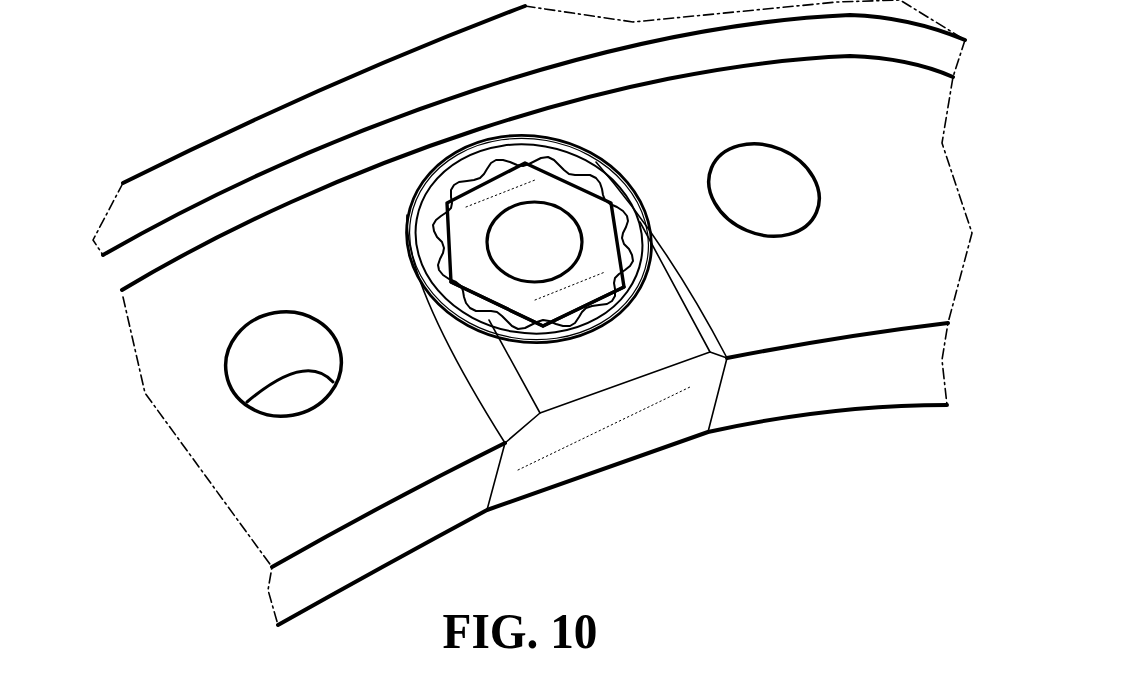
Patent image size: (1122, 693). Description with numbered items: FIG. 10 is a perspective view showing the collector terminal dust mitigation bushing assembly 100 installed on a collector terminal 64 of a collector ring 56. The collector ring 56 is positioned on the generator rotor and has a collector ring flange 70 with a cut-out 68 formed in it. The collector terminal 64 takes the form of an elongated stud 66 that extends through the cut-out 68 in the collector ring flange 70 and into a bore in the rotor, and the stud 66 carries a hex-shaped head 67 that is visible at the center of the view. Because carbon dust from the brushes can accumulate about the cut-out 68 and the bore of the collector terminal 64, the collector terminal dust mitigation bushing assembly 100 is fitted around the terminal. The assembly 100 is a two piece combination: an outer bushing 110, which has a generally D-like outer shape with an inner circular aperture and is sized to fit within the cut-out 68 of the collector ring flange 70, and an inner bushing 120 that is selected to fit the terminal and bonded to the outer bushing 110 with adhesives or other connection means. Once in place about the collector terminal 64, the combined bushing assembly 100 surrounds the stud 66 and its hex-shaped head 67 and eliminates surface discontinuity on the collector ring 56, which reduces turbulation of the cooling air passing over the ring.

The collector ring 56 is at (337, 93).
The collector terminal 64 is at (447, 212).
The elongated stud 66 is at (478, 258).
The hex-shaped head 67 is at (551, 312).
The cut-out 68 is at (700, 312).
The collector ring flange 70 is at (868, 325).
The collector terminal dust mitigation bushing assembly 100 is at (571, 145).
The outer bushing 110 is at (600, 163).
The inner bushing 120 is at (607, 190).